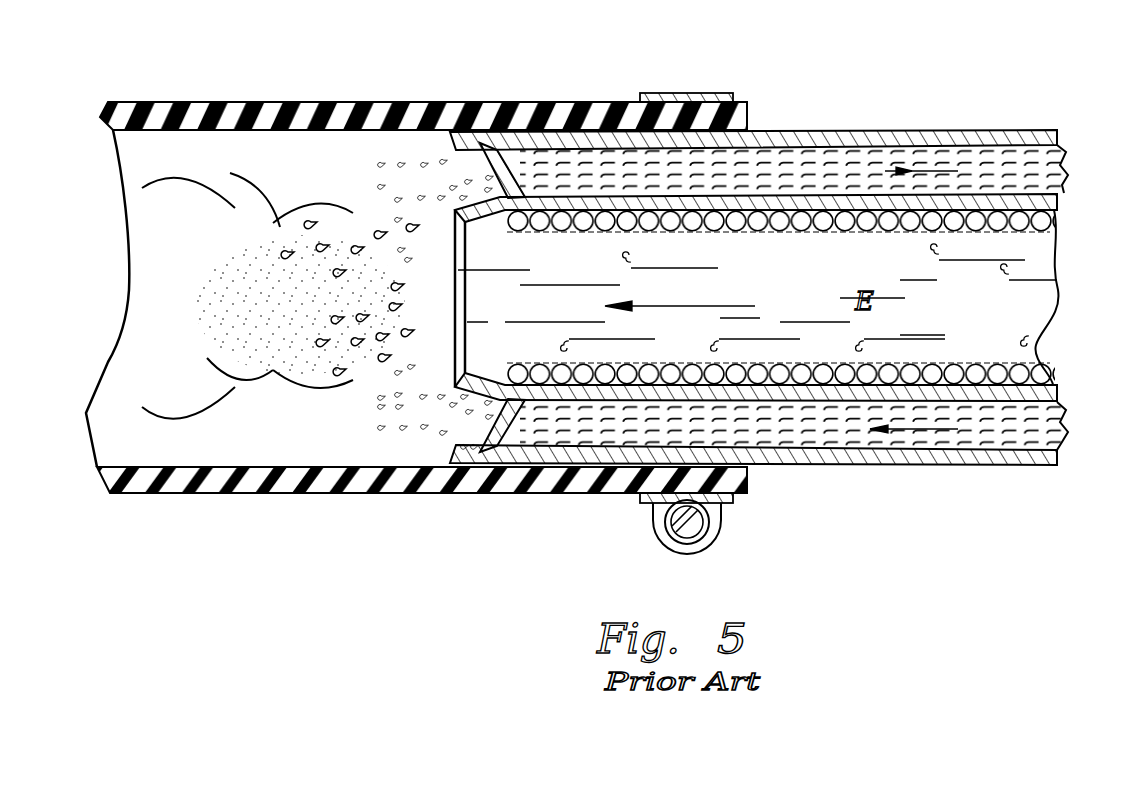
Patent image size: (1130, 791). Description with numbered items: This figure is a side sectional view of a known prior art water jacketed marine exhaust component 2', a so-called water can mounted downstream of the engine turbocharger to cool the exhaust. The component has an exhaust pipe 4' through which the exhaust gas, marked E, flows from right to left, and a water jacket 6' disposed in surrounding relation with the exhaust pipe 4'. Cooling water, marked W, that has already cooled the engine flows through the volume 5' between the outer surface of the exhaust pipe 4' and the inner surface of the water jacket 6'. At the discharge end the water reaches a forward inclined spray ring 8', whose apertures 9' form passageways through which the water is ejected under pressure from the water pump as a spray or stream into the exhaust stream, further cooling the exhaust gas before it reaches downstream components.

The water jacketed exhaust component 2' is at (501, 291).
The exhaust pipe 4' is at (756, 238).
The volume 5' is at (821, 269).
The water jacket 6' is at (753, 251).
The spray ring 8' is at (501, 121).
The apertures 9' is at (550, 290).